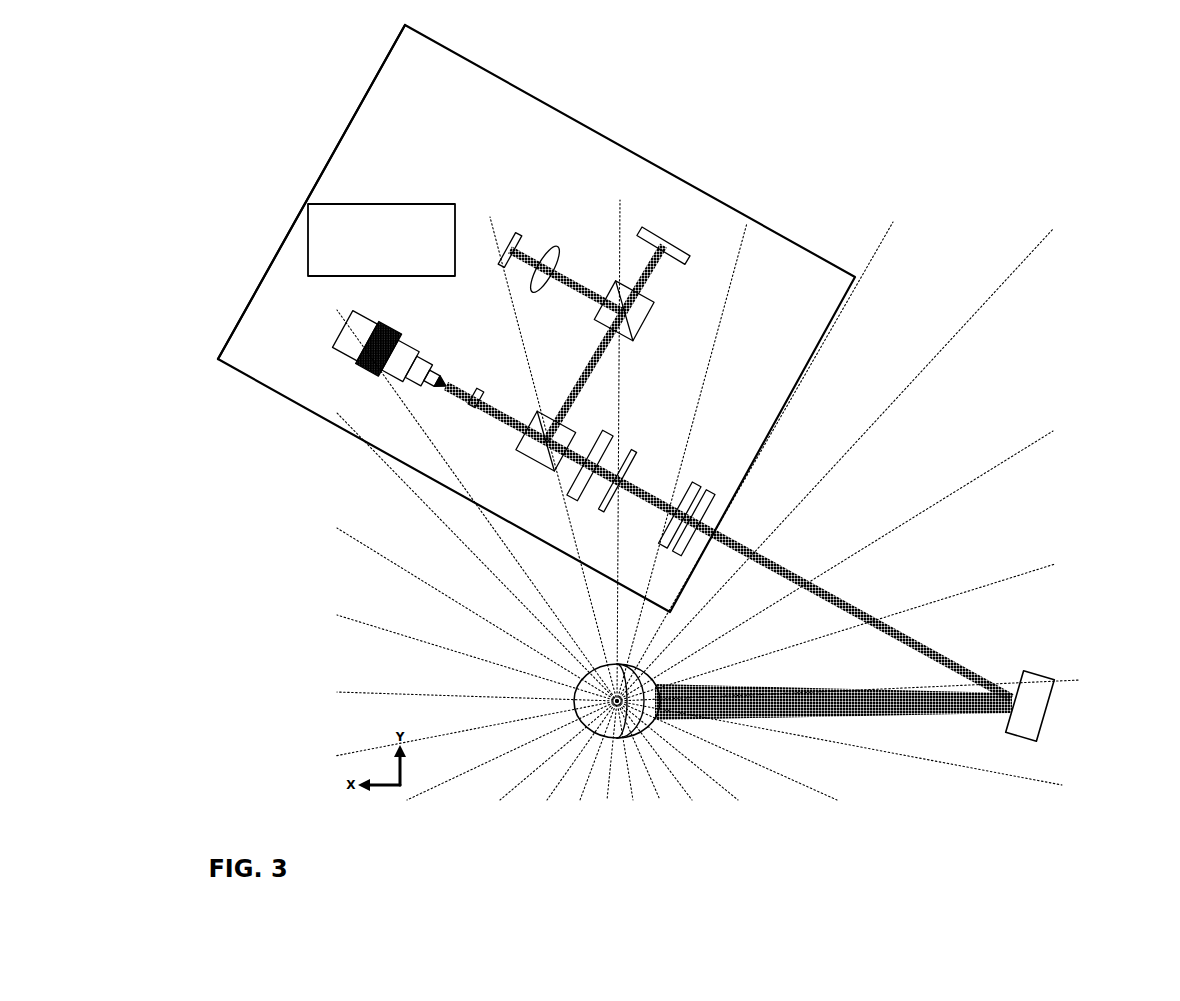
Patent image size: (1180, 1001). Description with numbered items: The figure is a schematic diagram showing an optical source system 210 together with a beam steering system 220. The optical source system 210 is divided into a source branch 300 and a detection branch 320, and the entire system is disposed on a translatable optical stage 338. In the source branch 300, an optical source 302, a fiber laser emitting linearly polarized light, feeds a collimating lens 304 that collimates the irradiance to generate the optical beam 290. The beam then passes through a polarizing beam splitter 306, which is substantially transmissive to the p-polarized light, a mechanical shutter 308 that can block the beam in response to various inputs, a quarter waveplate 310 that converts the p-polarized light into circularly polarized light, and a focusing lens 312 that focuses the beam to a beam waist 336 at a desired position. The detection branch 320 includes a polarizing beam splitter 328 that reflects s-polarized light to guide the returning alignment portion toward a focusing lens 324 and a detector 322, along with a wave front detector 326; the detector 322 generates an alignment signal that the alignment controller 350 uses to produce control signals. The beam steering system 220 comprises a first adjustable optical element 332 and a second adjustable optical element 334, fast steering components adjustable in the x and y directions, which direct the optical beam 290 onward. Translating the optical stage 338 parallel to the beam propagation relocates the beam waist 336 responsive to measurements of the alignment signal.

The optical source system 210 is at (570, 72).
The beam steering system 220 is at (1016, 418).
The optical beam 290 is at (887, 692).
The source branch 300 is at (360, 400).
The optical source 302 is at (352, 353).
The collimating lens 304 is at (465, 405).
The polarizing beam splitter 306 is at (520, 436).
The mechanical shutter 308 is at (575, 478).
The quarter waveplate 310 is at (605, 494).
The focusing lens 312 is at (668, 523).
The detection branch 320 is at (679, 264).
The detector 322 is at (512, 240).
The focusing lens 324 is at (555, 246).
The wave front detector 326 is at (684, 244).
The polarizing beam splitter 328 is at (657, 297).
The first adjustable optical element 332 is at (1020, 745).
The second adjustable optical element 334 is at (617, 733).
The beam waist 336 is at (815, 584).
The translatable optical stage 338 is at (346, 113).
The alignment controller 350 is at (382, 206).